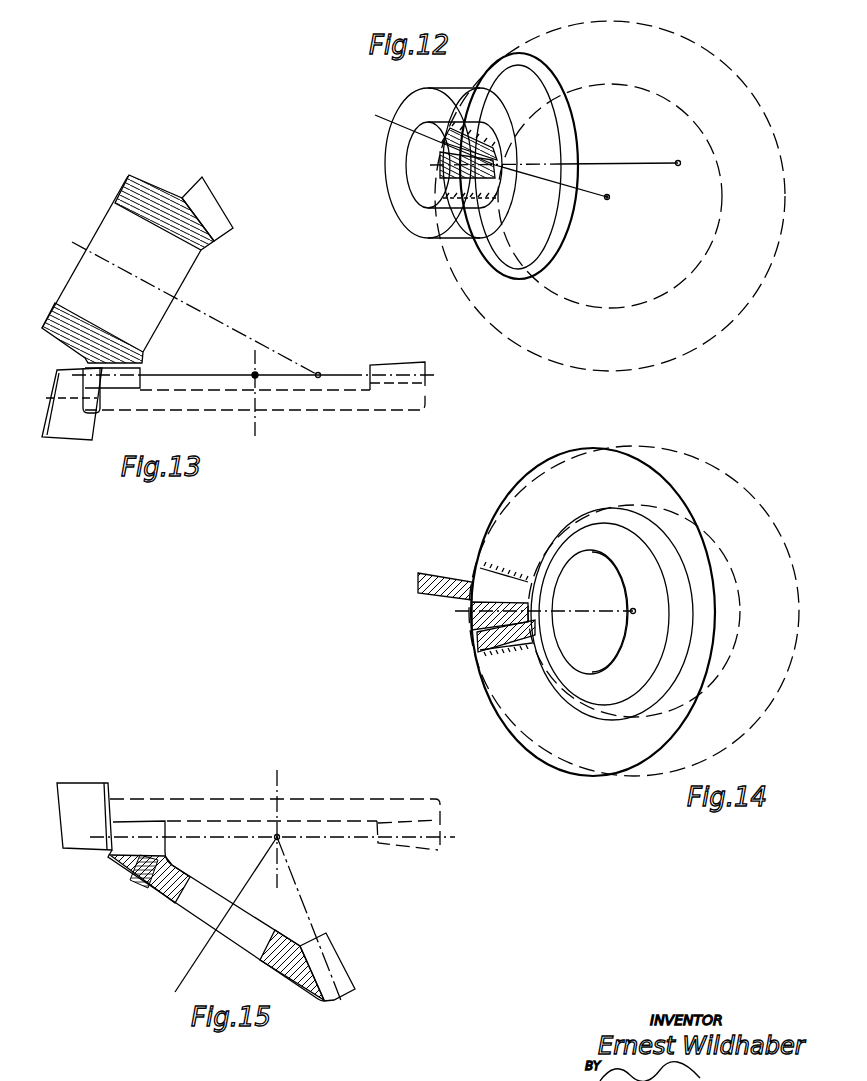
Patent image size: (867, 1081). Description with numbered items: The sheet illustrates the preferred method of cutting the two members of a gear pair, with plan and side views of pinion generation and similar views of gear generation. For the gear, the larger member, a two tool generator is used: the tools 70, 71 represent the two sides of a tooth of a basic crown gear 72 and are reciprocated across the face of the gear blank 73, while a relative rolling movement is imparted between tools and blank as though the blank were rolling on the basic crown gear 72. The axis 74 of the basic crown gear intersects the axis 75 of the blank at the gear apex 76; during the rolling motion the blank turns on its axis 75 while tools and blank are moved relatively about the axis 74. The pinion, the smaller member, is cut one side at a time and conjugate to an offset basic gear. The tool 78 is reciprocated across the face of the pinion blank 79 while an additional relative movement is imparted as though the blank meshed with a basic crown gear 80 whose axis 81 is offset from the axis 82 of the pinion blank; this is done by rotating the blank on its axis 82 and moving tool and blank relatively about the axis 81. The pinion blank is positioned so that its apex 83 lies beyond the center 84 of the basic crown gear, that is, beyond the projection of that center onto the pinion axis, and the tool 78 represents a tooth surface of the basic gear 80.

In FIG. 14, the tool 70 is at (443, 598).
In FIG. 15, the tool 70 is at (85, 838).
In FIG. 14, the tool 71 is at (478, 642).
In FIG. 14, the basic crown gear 72 is at (688, 467).
In FIG. 15, the basic crown gear 72 is at (407, 803).
In FIG. 14, the gear blank 73 is at (575, 755).
In FIG. 15, the gear blank 73 is at (315, 1000).
In FIG. 15, the axis of the basic crown gear 74 is at (280, 772).
In FIG. 15, the axis of the blank 75 is at (193, 965).
In FIG. 14, the gear apex 76 is at (631, 612).
In FIG. 15, the gear apex 76 is at (280, 840).
In FIG. 12, the tool 78 is at (480, 152).
In FIG. 13, the tool 78 is at (68, 430).
In FIG. 12, the pinion blank 79 is at (422, 223).
In FIG. 13, the pinion blank 79 is at (148, 190).
In FIG. 12, the basic crown gear 80 is at (553, 350).
In FIG. 13, the basic crown gear 80 is at (425, 393).
In FIG. 12, the axis of the basic gear 81 is at (642, 214).
In FIG. 13, the axis of the basic gear 81 is at (255, 438).
In FIG. 12, the axis of the pinion blank 82 is at (633, 165).
In FIG. 13, the axis of the pinion blank 82 is at (210, 316).
In FIG. 12, the apex of the pinion blank 83 is at (680, 165).
In FIG. 13, the apex of the pinion blank 83 is at (320, 372).
In FIG. 12, the center of the basic crown gear 84 is at (607, 197).
In FIG. 13, the center of the basic crown gear 84 is at (255, 373).